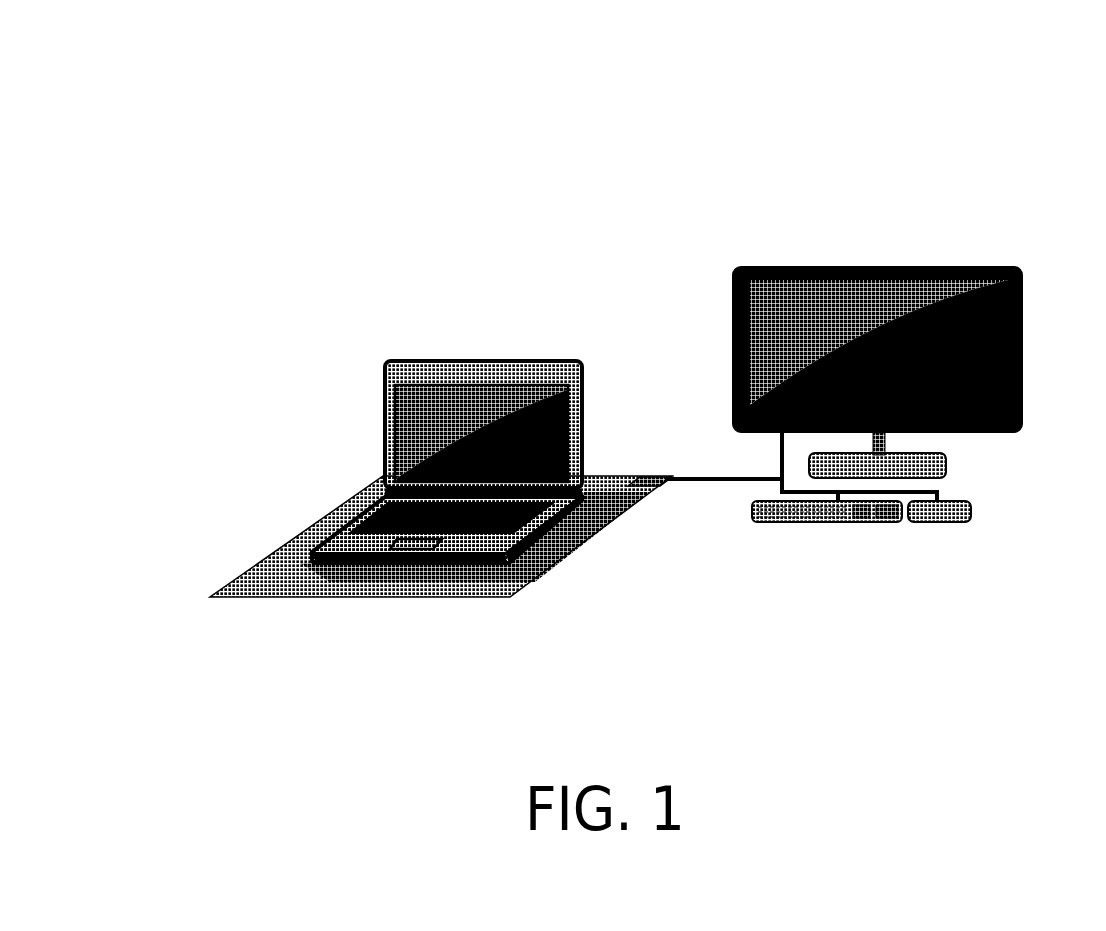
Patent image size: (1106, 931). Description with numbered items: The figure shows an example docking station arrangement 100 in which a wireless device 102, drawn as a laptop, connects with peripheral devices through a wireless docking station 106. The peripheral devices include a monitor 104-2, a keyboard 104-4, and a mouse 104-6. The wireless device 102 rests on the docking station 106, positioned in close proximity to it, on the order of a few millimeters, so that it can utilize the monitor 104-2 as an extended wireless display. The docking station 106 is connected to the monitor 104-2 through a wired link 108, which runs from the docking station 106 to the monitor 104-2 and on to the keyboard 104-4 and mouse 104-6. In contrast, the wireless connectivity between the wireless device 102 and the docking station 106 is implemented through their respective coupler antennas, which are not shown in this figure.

The docking station arrangement 100 is at (215, 100).
The wireless device 102 is at (383, 440).
The monitor 104-2 is at (853, 222).
The keyboard 104-4 is at (839, 530).
The mouse 104-6 is at (947, 530).
The docking station 106 is at (558, 560).
The wired link 108 is at (735, 478).